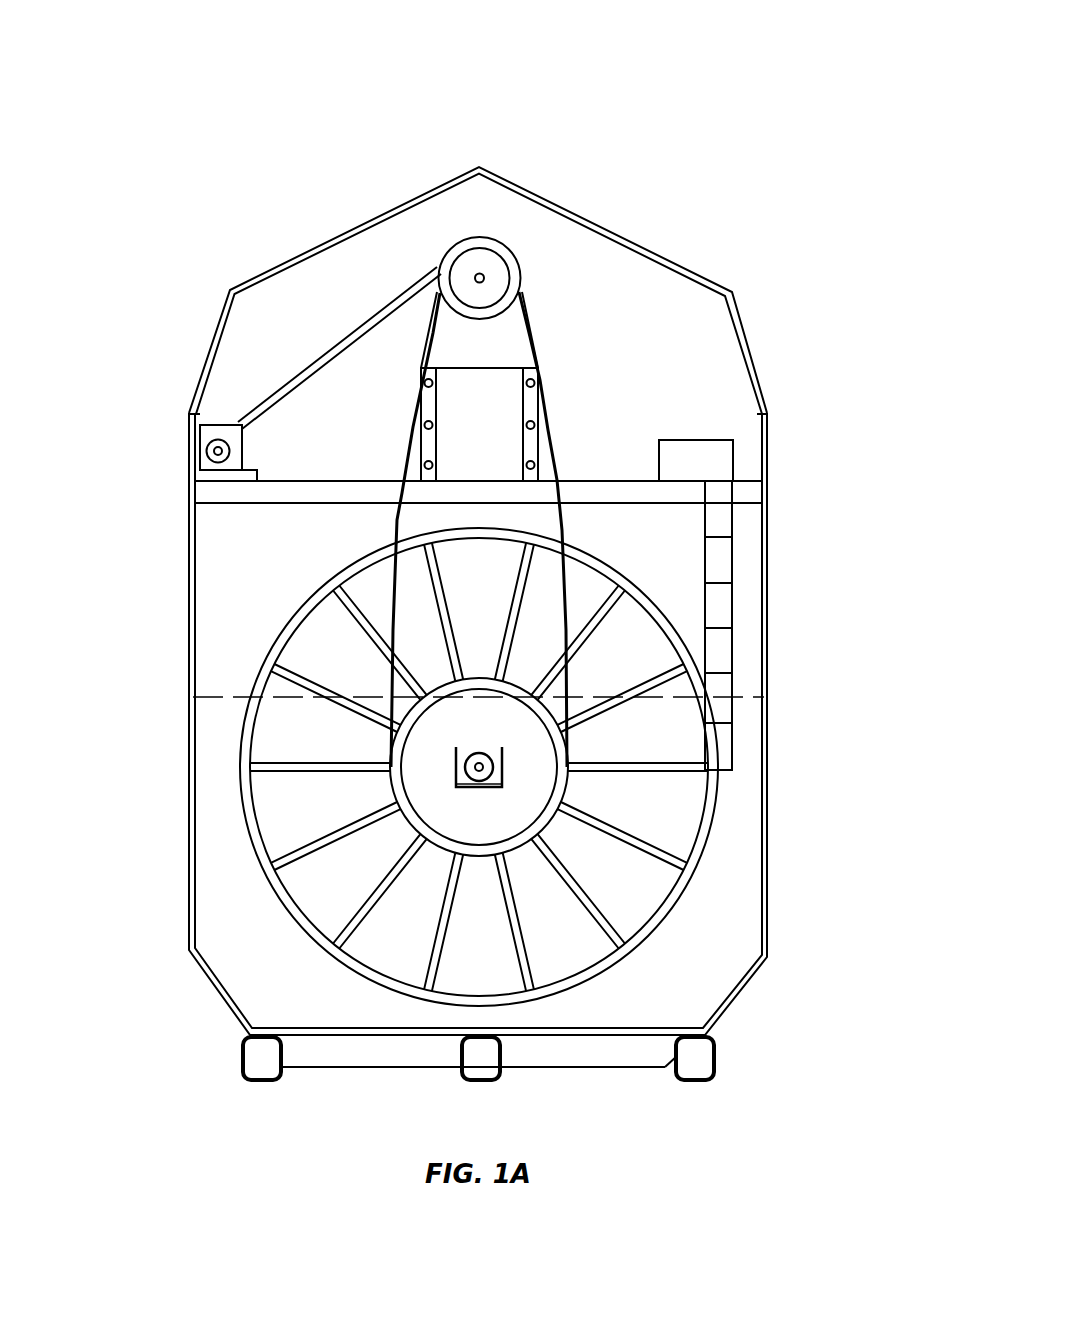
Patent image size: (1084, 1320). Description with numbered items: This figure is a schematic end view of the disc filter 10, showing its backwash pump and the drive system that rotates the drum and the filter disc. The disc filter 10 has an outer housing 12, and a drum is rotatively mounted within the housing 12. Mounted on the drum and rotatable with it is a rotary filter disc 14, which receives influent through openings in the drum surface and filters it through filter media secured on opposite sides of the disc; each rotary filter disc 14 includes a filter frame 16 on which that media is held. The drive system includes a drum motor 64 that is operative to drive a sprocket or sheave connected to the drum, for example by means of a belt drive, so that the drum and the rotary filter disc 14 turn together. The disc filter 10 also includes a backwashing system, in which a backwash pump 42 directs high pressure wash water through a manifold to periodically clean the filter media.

The disc filter 10 is at (600, 130).
The outer housing 12 is at (357, 232).
The rotary filter disc 14 is at (238, 882).
The filter frame 16 is at (303, 915).
The backwash pump 42 is at (714, 460).
The drum motor 64 is at (497, 275).